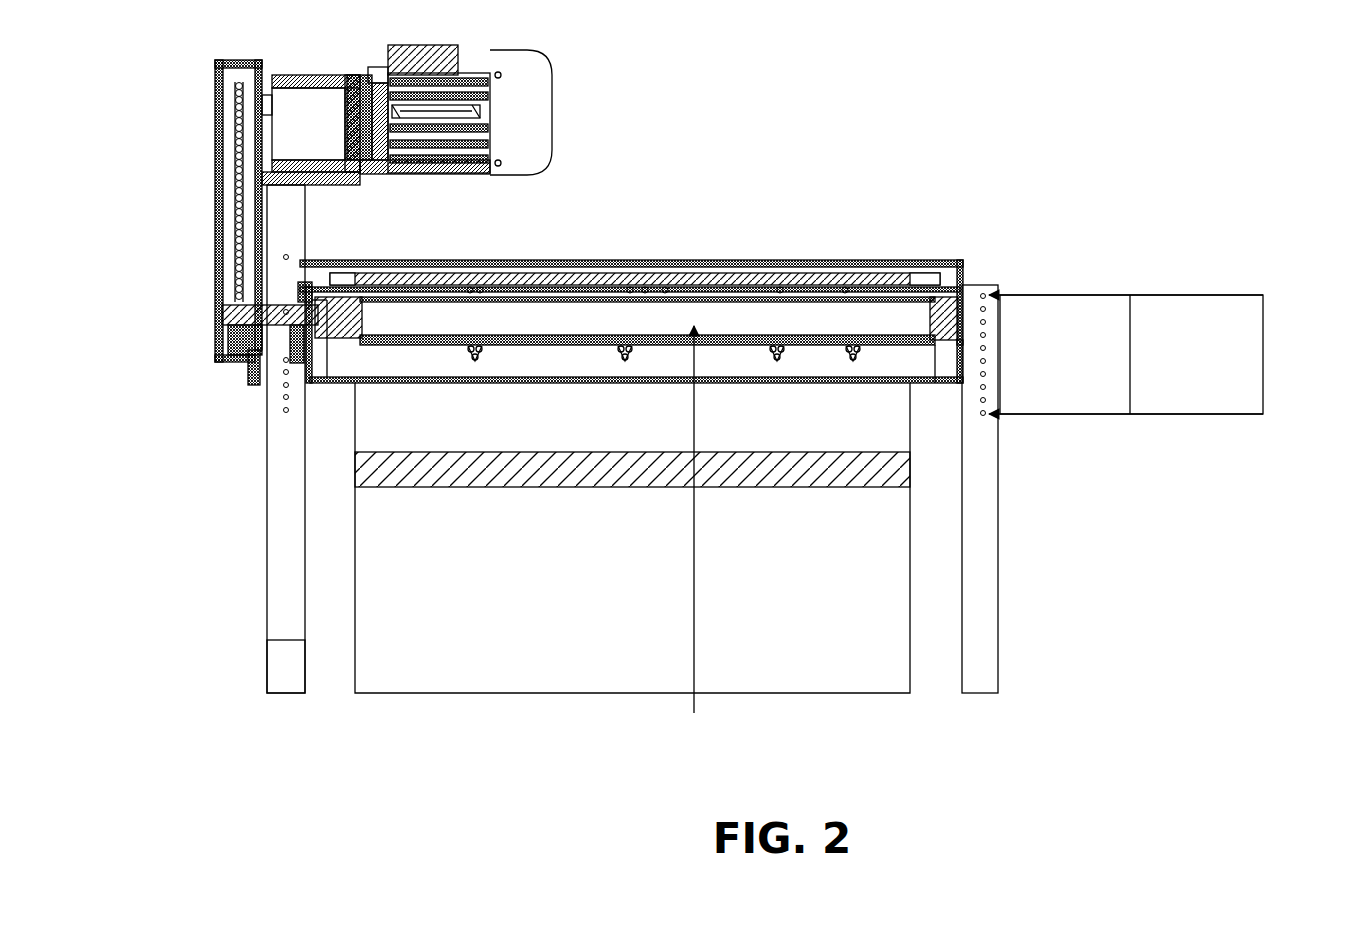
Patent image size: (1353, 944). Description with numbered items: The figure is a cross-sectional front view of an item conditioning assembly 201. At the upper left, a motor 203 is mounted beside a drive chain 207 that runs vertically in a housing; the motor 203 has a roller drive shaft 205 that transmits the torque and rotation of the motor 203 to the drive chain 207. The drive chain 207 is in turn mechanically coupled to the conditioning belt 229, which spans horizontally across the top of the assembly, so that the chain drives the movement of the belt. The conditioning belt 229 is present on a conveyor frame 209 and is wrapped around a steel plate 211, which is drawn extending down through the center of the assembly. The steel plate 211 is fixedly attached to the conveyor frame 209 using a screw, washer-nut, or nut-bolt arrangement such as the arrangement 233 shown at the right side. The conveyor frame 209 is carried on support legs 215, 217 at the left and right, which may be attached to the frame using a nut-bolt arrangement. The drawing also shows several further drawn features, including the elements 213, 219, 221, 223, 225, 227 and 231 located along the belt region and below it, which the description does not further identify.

The item conditioning assembly 201 is at (767, 117).
The motor 203 is at (556, 107).
The roller drive shaft 205 is at (454, 119).
The drive chain 207 is at (236, 125).
The conveyor frame 209 is at (265, 467).
The steel plate 211 is at (689, 533).
The tank 213 is at (456, 642).
The support leg 215 is at (285, 678).
The support leg 217 is at (978, 674).
The roller 219 is at (475, 367).
The roller 221 is at (625, 367).
The roller 223 is at (777, 367).
The roller 225 is at (853, 367).
The guide rail 227 is at (625, 284).
The conditioning belt 229 is at (692, 259).
The carrier plate 231 is at (823, 290).
The nut-bolt arrangement 233 is at (1275, 295).